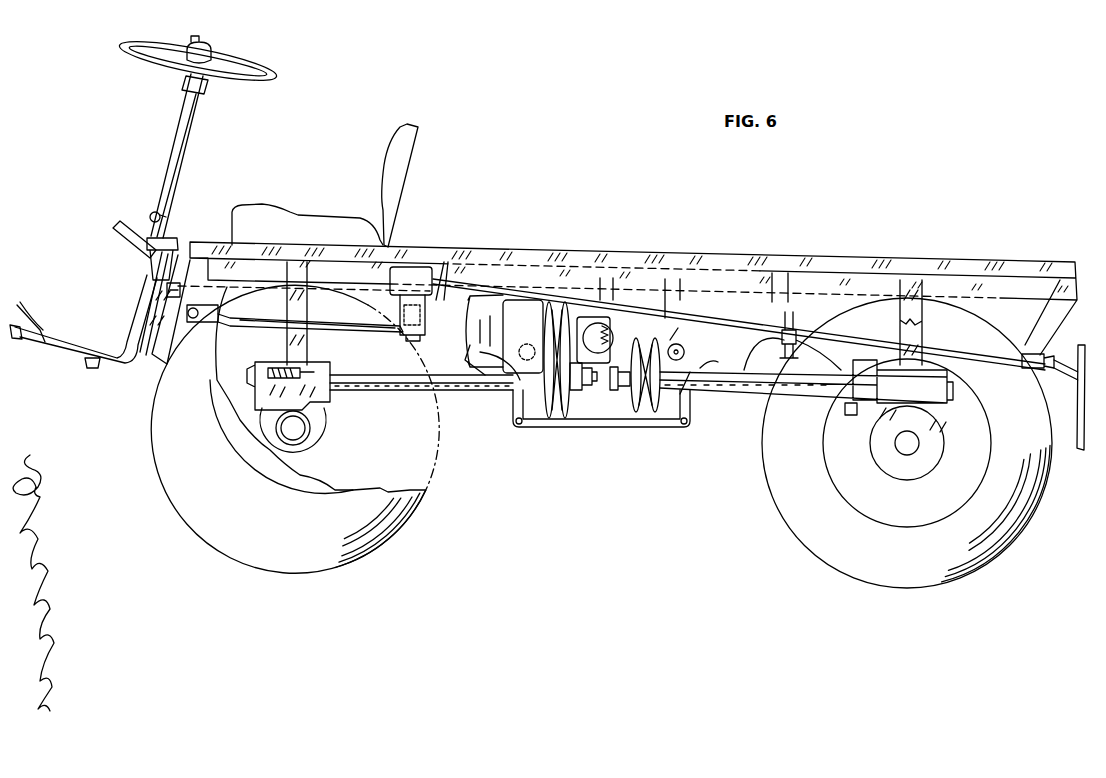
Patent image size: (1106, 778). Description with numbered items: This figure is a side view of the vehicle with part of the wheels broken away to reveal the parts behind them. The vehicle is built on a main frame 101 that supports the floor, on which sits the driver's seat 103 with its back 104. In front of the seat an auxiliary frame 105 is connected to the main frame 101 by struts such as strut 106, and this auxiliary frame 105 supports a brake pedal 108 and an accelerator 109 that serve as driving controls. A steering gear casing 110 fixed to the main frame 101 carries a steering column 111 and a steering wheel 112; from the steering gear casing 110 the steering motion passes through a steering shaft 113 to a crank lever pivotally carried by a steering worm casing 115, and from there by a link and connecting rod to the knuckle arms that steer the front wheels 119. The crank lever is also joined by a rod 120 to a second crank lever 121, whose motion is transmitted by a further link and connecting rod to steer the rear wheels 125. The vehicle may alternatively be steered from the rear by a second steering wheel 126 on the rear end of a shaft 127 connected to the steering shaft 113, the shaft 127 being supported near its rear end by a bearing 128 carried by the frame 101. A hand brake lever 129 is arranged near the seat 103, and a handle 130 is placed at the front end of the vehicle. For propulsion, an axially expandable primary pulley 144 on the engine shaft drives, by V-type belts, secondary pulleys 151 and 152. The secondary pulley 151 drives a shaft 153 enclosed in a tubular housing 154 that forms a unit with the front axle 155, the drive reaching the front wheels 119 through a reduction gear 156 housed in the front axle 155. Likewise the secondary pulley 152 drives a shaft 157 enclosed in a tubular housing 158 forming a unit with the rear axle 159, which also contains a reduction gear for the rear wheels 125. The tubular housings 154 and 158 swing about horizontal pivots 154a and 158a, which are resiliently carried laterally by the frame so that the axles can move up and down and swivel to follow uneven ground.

The frame 101 is at (445, 258).
The seat 103 is at (322, 222).
The back 104 is at (392, 160).
The auxiliary frame 105 is at (106, 368).
The strut 106 is at (142, 355).
The brake pedal 108 is at (70, 308).
The accelerator 109 is at (27, 333).
The steering gear casing 110 is at (145, 267).
The steering column 111 is at (174, 138).
The steering wheel 112 is at (273, 76).
The steering shaft 113 is at (454, 272).
The steering worm casing 115 is at (417, 279).
The front wheels 119 is at (386, 520).
The rod 120 is at (620, 316).
The second crank lever 121 is at (833, 324).
The rear wheels 125 is at (780, 486).
The second steering wheel 126 is at (1076, 400).
The shaft 127 is at (960, 328).
The bearing 128 is at (1034, 354).
The hand brake lever 129 is at (112, 236).
The handle 130 is at (150, 213).
The primary pulley 144 is at (580, 297).
The secondary pulley 151 is at (524, 425).
The secondary pulley 152 is at (626, 408).
The shaft 153 is at (318, 350).
The tubular housing 154 is at (396, 380).
The horizontal pivot 154a is at (500, 394).
The front axle 155 is at (308, 432).
The reduction gear 156 is at (276, 360).
The shaft 157 is at (608, 388).
The tubular housing 158 is at (780, 396).
The horizontal pivot 158a is at (700, 403).
The rear axle 159 is at (896, 455).